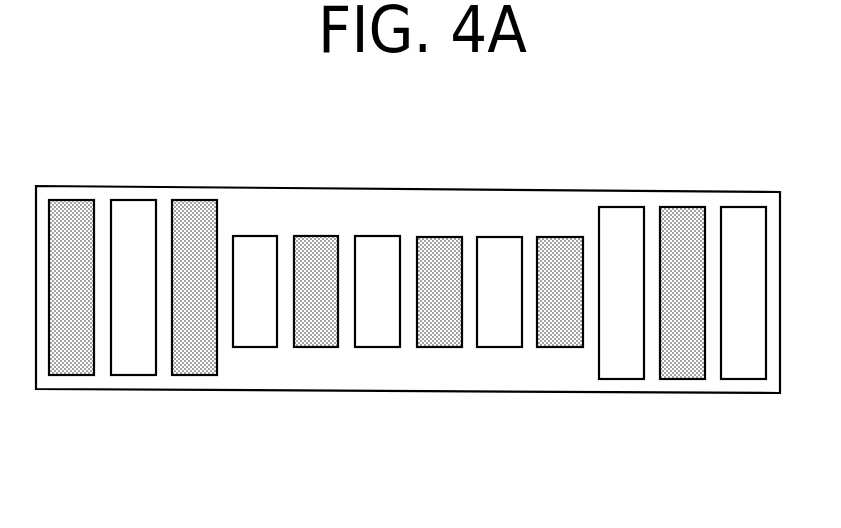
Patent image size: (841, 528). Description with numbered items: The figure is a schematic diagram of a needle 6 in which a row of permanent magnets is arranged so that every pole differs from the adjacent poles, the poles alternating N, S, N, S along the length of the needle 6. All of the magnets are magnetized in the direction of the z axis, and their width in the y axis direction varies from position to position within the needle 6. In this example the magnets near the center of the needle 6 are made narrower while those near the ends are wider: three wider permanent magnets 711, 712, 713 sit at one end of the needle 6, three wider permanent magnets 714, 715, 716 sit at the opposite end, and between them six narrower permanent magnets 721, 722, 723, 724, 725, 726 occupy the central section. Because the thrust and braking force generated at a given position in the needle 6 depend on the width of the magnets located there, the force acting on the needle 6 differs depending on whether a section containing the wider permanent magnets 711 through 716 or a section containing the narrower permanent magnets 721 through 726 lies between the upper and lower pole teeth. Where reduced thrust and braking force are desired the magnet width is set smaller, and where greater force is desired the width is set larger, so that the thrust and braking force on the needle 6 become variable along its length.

The needle 6 is at (676, 192).
The permanent magnet 711 is at (70, 367).
The permanent magnet 712 is at (135, 367).
The permanent magnet 713 is at (197, 367).
The permanent magnet 714 is at (623, 365).
The permanent magnet 715 is at (692, 365).
The permanent magnet 716 is at (752, 365).
The permanent magnet 721 is at (253, 328).
The permanent magnet 722 is at (320, 328).
The permanent magnet 723 is at (387, 328).
The permanent magnet 724 is at (443, 328).
The permanent magnet 725 is at (507, 328).
The permanent magnet 726 is at (567, 328).